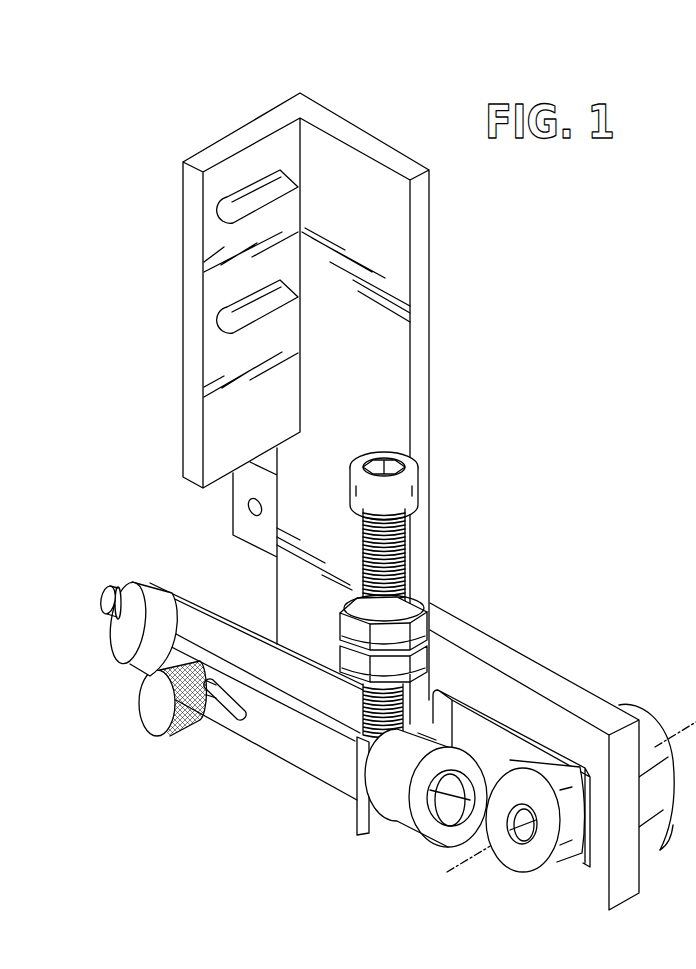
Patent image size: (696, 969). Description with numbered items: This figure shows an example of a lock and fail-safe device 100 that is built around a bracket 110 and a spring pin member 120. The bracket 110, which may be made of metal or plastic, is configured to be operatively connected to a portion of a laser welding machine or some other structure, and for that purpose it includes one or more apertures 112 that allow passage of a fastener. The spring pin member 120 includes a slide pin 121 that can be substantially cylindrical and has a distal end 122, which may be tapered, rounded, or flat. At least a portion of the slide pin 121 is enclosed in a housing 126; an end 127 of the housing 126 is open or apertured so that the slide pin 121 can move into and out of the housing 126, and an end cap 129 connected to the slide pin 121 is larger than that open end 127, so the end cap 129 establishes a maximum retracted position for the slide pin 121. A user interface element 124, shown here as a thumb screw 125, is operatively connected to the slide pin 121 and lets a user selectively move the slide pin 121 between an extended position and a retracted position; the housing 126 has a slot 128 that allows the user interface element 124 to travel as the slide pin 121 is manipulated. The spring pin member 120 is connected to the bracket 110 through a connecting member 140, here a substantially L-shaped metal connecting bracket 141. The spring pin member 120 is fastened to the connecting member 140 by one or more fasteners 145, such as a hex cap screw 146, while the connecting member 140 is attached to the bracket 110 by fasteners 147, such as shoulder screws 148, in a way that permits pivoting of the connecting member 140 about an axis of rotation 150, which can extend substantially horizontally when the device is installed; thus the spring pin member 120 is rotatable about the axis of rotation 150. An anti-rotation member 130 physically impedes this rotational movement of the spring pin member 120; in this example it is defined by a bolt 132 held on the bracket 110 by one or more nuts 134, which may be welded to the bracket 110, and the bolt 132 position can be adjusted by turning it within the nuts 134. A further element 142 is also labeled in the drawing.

The lock and fail-safe device 100 is at (158, 111).
The bracket 110 is at (282, 101).
The apertures 112 is at (263, 210).
The spring pin member 120 is at (257, 771).
The slide pin 121 is at (127, 584).
The distal end 122 is at (102, 591).
The user interface element 124 is at (136, 724).
The thumb screw 125 is at (163, 735).
The housing 126 is at (328, 772).
The end of the housing 127 is at (163, 580).
The slot 128 is at (244, 708).
The end cap 129 is at (96, 600).
The anti-rotation member 130 is at (420, 549).
The bolt 132 is at (396, 575).
The nuts 134 is at (423, 658).
The connecting member 140 is at (501, 696).
The connecting bracket 141 is at (538, 743).
The rear roller 142 is at (655, 803).
The fasteners 145 is at (395, 844).
The hex cap screw 146 is at (417, 851).
The fasteners 147 is at (517, 880).
The shoulder screws 148 is at (563, 862).
The axis of rotation 150 is at (447, 873).